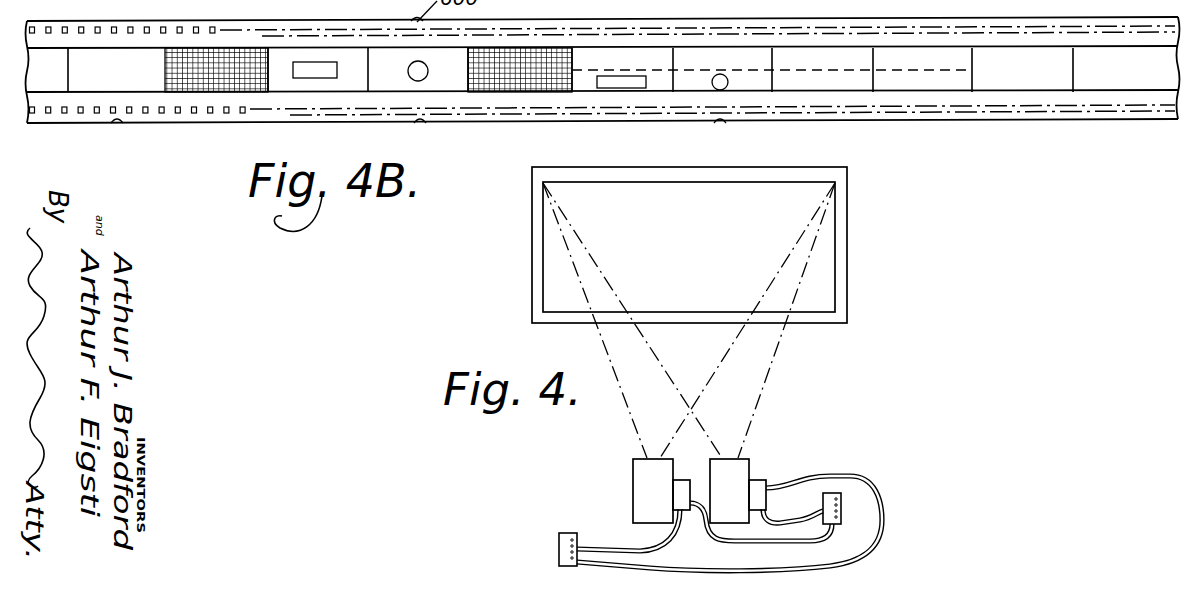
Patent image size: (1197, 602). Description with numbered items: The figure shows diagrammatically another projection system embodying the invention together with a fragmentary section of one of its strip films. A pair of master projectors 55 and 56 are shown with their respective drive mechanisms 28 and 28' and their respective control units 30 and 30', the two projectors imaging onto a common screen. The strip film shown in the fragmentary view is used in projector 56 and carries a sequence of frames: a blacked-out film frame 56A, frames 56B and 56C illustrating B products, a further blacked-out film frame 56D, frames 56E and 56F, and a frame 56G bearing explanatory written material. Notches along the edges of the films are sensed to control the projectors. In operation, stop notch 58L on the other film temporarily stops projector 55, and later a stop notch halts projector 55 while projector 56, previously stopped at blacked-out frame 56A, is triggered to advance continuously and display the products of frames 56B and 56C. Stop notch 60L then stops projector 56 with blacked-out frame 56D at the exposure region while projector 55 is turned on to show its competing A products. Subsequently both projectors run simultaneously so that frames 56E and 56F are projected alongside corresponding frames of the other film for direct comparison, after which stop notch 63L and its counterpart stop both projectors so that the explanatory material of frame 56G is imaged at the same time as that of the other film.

In FIG. 4, the master projector 55 is at (640, 487).
In FIG. 4, the master projector 56 is at (738, 474).
In FIG. 4, the drive mechanism 28 is at (687, 471).
In FIG. 4, the drive mechanism 28' is at (790, 476).
In FIG. 4, the control unit 30 is at (528, 547).
In FIG. 4, the control unit 30' is at (870, 489).
In FIG. 4B, the stop notch 58L is at (117, 121).
In FIG. 4B, the stop notch 60L is at (422, 122).
In FIG. 4B, the stop notch 63L is at (720, 122).
In FIG. 4B, the blacked-out film frame 56A is at (232, 85).
In FIG. 4B, the film frame 56B is at (328, 85).
In FIG. 4B, the film frame 56C is at (393, 82).
In FIG. 4B, the blacked-out film frame 56D is at (538, 84).
In FIG. 4B, the film frame 56E is at (658, 82).
In FIG. 4B, the film frame 56F is at (753, 83).
In FIG. 4B, the film frame 56G is at (835, 77).